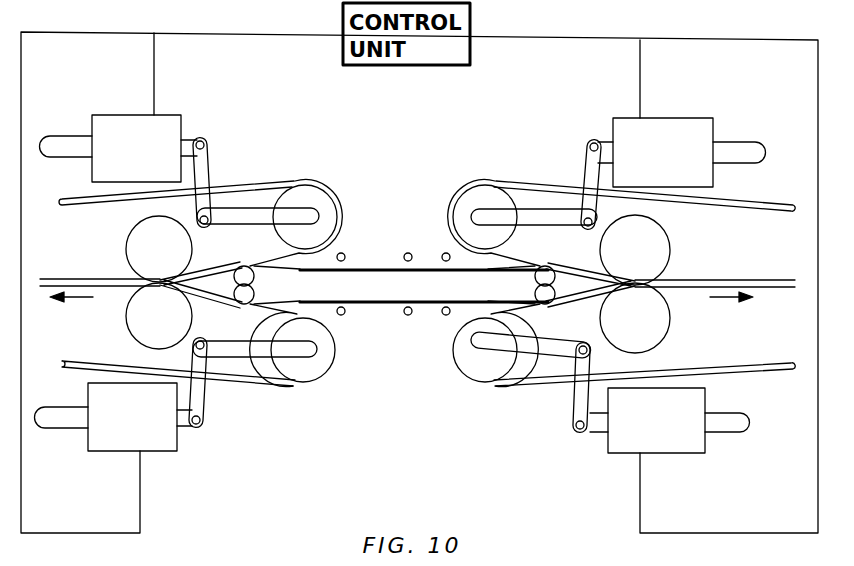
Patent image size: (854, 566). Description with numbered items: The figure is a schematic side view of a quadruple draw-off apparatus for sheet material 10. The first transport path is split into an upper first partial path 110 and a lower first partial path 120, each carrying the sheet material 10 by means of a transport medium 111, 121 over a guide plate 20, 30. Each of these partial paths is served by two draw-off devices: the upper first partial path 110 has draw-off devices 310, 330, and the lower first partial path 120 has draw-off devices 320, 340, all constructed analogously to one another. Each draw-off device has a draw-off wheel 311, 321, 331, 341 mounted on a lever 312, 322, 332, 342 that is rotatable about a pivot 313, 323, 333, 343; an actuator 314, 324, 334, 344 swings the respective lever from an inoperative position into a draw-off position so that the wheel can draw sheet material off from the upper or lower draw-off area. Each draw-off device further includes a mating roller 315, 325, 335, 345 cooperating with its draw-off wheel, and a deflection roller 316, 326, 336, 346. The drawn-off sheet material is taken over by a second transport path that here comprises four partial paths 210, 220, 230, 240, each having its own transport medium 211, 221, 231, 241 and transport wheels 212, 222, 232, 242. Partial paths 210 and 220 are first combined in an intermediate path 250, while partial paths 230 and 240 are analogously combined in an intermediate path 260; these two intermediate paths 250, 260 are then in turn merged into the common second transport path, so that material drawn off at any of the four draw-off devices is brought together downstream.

The sheet material 10 is at (419, 352).
The guide plate 20 is at (424, 231).
The guide plate 30 is at (407, 316).
The upper first partial path 110 is at (357, 248).
The transport medium 111 is at (443, 255).
The lower first partial path 120 is at (364, 341).
The transport medium 121 is at (290, 305).
The partial path 210 is at (657, 234).
The transport medium 211 is at (722, 205).
The transport wheels 212 is at (742, 212).
The partial path 220 is at (662, 331).
The transport medium 221 is at (697, 368).
The transport wheels 222 is at (670, 333).
The partial path 230 is at (138, 238).
The transport medium 231 is at (90, 190).
The transport wheels 232 is at (76, 202).
The partial path 240 is at (142, 333).
The transport medium 241 is at (80, 376).
The transport wheels 242 is at (100, 364).
The intermediate path 250 is at (720, 278).
The intermediate path 260 is at (48, 271).
The draw-off device 310 is at (506, 173).
The draw-off wheel 311 is at (470, 215).
The lever 312 is at (490, 205).
The pivot 313 is at (583, 215).
The actuator 314 is at (656, 130).
The mating roller 315 is at (470, 195).
The deflection roller 316 is at (546, 274).
The draw-off device 320 is at (506, 388).
The draw-off wheel 321 is at (463, 358).
The lever 322 is at (485, 340).
The pivot 323 is at (578, 356).
The actuator 324 is at (686, 432).
The mating roller 325 is at (500, 345).
The deflection roller 326 is at (545, 296).
The draw-off device 330 is at (283, 167).
The draw-off wheel 331 is at (314, 212).
The lever 332 is at (296, 183).
The pivot 333 is at (212, 190).
The actuator 334 is at (118, 123).
The mating roller 335 is at (311, 186).
The deflection roller 336 is at (243, 274).
The draw-off device 340 is at (266, 392).
The draw-off wheel 341 is at (283, 352).
The lever 342 is at (290, 358).
The pivot 343 is at (201, 390).
The actuator 344 is at (116, 436).
The mating roller 345 is at (312, 378).
The deflection roller 346 is at (244, 296).